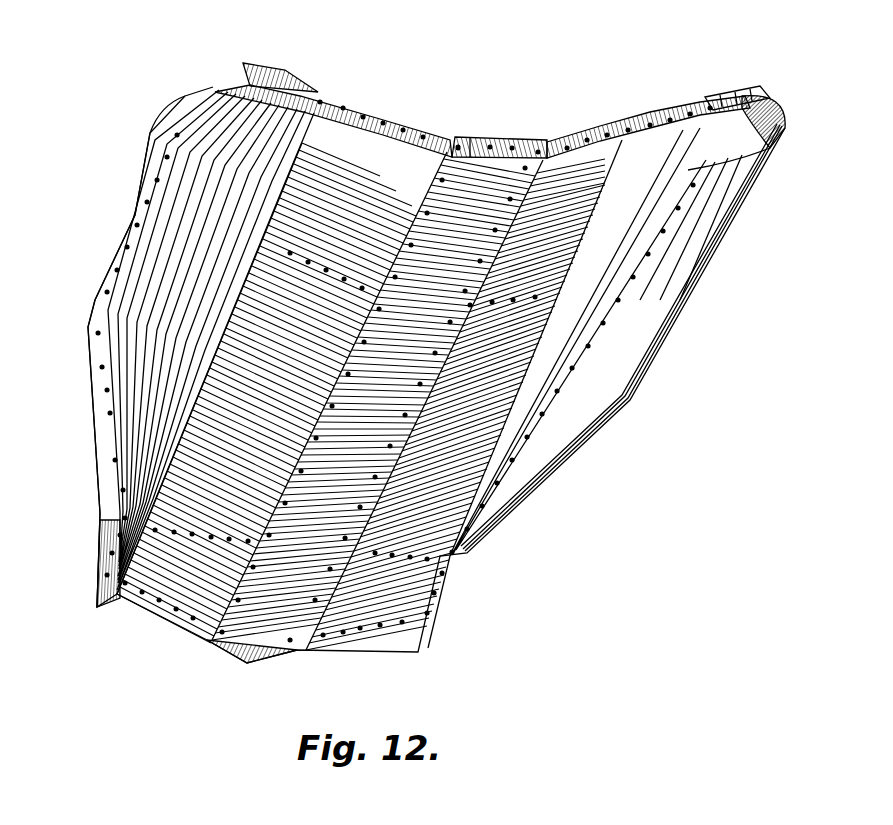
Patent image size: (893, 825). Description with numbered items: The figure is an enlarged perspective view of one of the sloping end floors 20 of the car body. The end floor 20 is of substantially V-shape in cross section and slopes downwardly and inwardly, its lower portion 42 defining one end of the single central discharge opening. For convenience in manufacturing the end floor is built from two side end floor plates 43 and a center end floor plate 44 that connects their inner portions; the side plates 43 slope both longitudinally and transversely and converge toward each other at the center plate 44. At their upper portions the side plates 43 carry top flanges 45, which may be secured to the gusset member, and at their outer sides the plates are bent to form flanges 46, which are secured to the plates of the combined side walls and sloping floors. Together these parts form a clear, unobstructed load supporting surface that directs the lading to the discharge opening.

The sloping end floor 20 is at (410, 160).
The lower portion of the sloping end floor 42 is at (310, 650).
The side end floor plate 43 is at (348, 140).
The center end floor plate 44 is at (505, 137).
The top flange 45 is at (253, 63).
The flange 46 is at (95, 382).